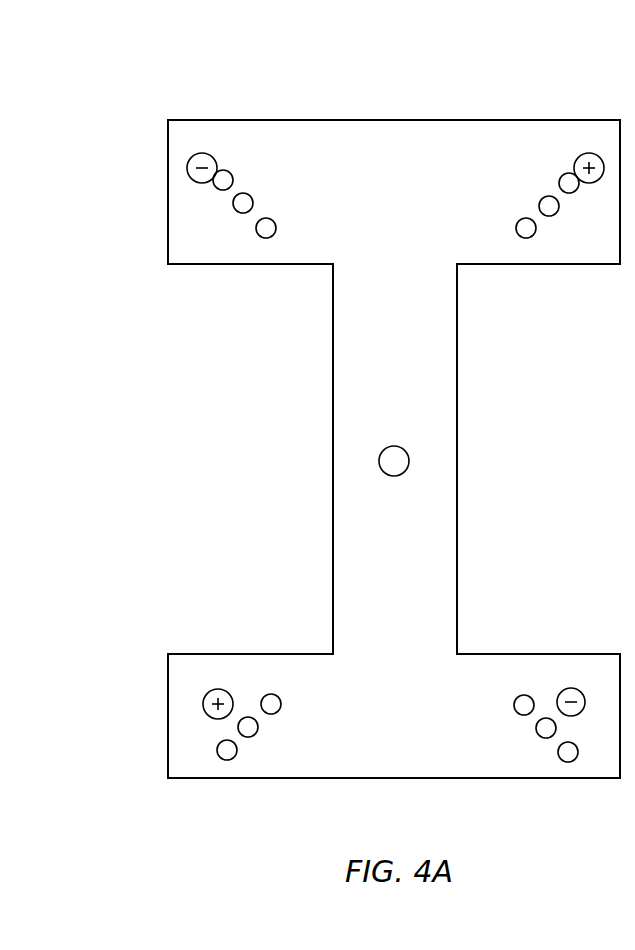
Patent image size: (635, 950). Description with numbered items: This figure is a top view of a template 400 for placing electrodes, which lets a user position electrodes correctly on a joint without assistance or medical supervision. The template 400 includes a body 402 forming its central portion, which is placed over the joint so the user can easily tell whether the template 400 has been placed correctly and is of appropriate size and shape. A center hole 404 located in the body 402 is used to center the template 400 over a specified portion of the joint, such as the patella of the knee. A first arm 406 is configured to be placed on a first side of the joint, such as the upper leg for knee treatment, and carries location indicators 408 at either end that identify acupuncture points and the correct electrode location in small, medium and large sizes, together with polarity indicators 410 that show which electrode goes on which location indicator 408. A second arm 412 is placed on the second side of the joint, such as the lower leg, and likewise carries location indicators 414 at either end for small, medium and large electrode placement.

The template 400 is at (190, 72).
The body 402 is at (457, 422).
The center hole 404 is at (418, 662).
The first arm 406 is at (227, 740).
The location indicators 408 is at (213, 697).
The polarity indicators 410 is at (373, 227).
The second arm 412 is at (245, 208).
The location indicators 414 is at (199, 175).